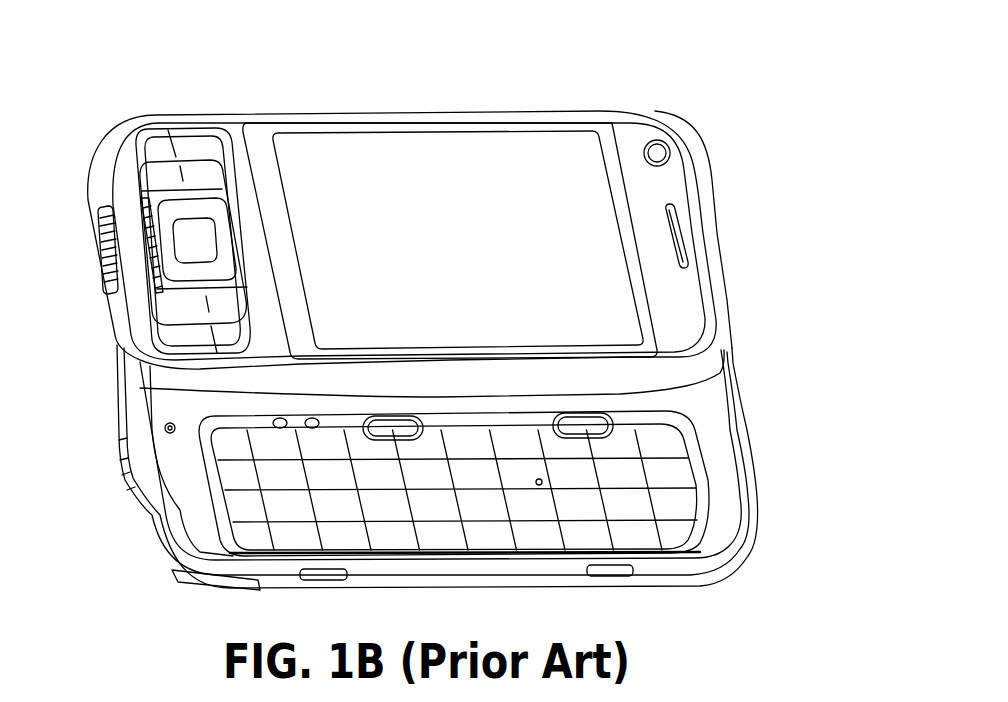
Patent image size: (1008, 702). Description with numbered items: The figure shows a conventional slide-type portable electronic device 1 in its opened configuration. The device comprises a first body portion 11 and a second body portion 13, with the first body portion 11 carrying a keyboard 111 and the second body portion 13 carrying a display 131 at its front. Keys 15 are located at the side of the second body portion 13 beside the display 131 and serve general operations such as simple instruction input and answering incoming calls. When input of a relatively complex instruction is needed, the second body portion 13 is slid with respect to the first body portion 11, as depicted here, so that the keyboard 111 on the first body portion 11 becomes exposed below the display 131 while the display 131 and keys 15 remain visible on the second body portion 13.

The portable electronic device 1 is at (712, 127).
The first body portion 11 is at (723, 577).
The keyboard 111 is at (680, 474).
The second body portion 13 is at (710, 227).
The display 131 is at (490, 167).
The keys 15 is at (163, 216).